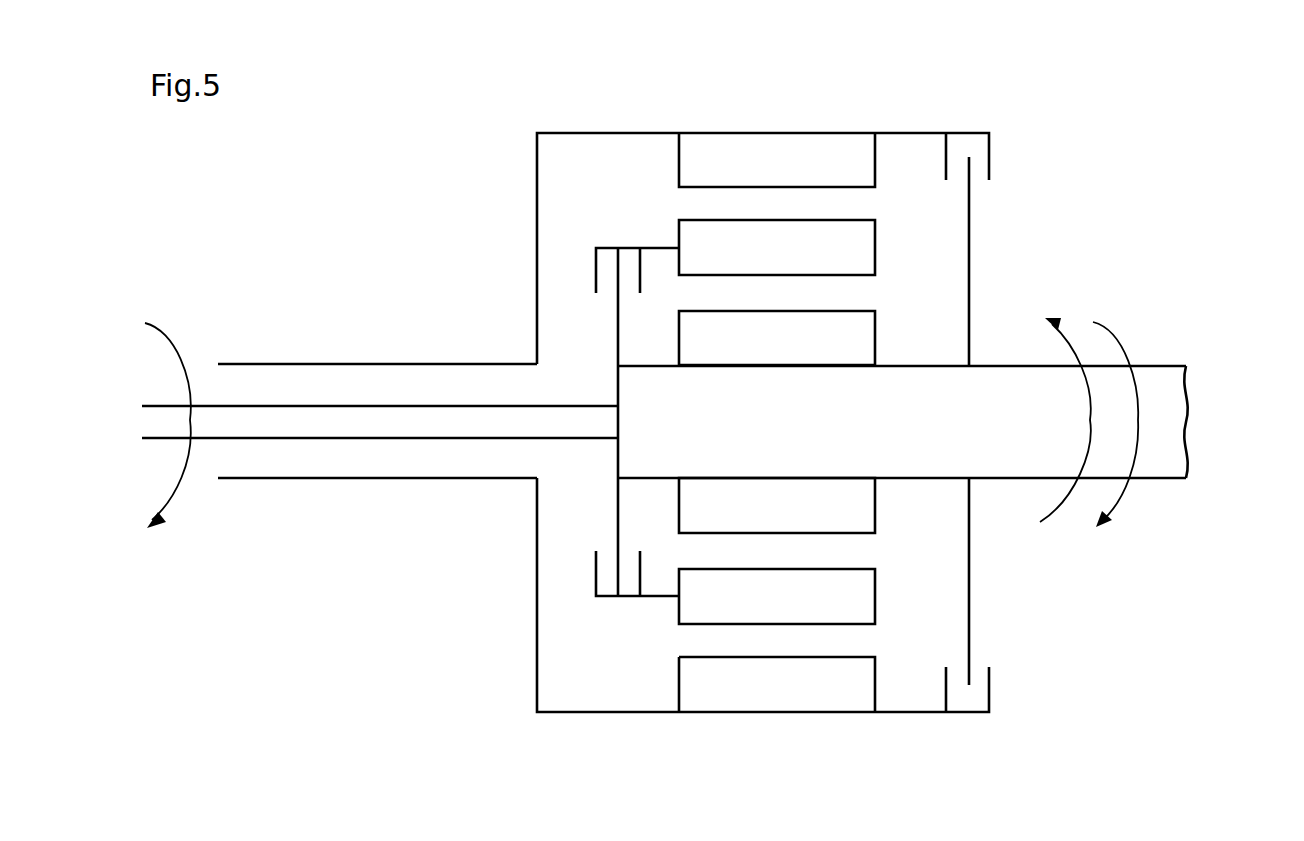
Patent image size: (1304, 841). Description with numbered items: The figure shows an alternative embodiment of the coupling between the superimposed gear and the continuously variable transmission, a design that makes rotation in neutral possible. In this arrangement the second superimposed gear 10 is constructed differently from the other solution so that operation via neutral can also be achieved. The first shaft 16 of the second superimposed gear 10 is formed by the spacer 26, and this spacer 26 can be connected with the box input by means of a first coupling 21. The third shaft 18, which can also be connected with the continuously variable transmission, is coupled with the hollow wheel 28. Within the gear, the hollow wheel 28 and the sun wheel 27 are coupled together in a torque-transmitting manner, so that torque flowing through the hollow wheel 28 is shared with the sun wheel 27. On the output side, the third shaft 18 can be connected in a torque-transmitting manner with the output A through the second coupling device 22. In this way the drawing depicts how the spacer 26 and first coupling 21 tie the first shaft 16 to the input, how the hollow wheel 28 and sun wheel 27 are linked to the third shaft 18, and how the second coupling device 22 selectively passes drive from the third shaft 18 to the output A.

The second superimposed gear 10 is at (827, 368).
The first shaft 16 is at (318, 428).
The third shaft 18 is at (343, 375).
The first coupling 21 is at (638, 306).
The second coupling device 22 is at (1006, 153).
The spacer 26 is at (650, 247).
The sun wheel 27 is at (865, 492).
The hollow wheel 28 is at (828, 150).
The output A is at (1172, 423).